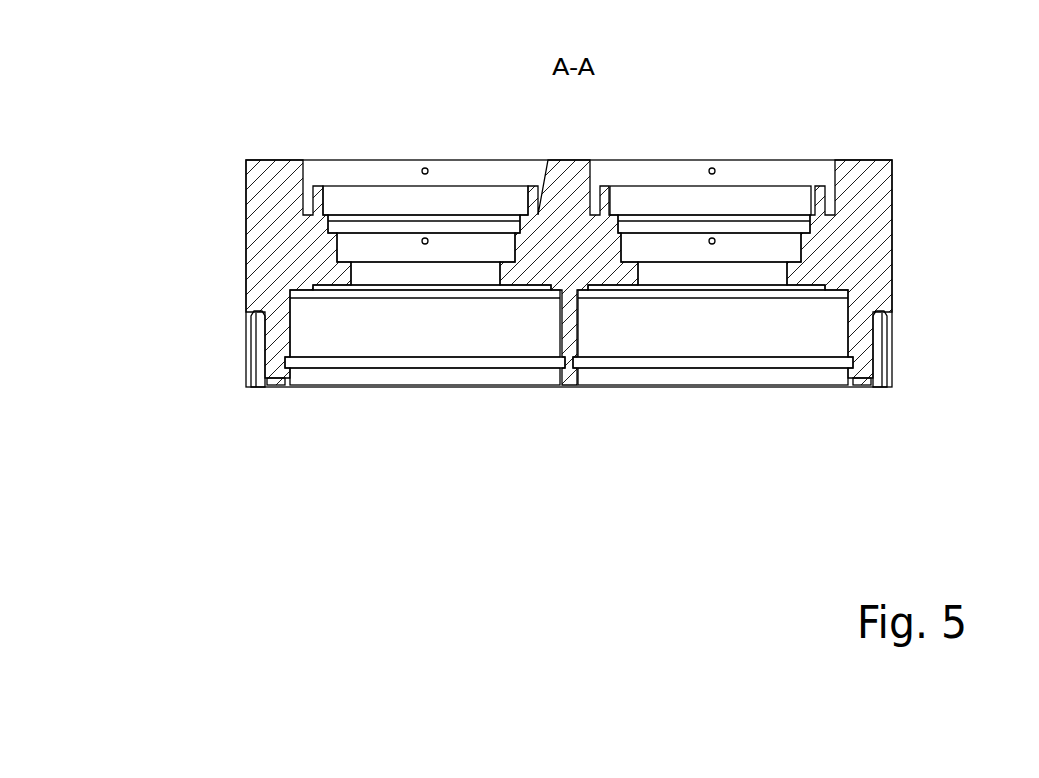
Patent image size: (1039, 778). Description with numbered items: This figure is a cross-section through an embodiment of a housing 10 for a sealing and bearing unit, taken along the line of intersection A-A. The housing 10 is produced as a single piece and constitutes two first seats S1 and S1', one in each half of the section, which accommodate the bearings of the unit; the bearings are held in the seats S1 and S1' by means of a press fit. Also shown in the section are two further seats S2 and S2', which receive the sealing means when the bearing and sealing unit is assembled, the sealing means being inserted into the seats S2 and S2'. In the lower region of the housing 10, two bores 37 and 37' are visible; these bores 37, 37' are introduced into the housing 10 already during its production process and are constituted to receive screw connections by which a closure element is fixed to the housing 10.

The housing 10 is at (488, 563).
The bore 37 is at (425, 357).
The bore 37' is at (713, 353).
The first seat S1 is at (338, 368).
The seat S2 is at (318, 228).
The first seat S1' is at (787, 371).
The seat S2' is at (821, 198).